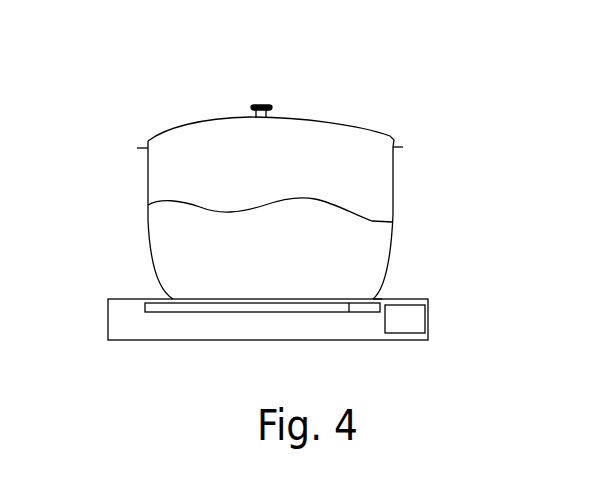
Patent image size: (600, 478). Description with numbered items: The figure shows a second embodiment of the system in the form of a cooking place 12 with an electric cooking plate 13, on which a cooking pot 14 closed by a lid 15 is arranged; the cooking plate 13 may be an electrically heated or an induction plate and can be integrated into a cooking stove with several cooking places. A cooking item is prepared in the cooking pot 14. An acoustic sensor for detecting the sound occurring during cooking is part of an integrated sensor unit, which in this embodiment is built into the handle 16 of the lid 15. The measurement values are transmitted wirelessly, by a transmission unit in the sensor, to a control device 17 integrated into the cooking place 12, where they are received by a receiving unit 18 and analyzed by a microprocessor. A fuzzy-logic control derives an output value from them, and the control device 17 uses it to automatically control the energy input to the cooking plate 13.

The cooking place 12 is at (108, 317).
The electric cooking plate 13 is at (307, 306).
The cooking pot 14 is at (148, 169).
The lid 15 is at (342, 122).
The handle of the lid 16 is at (262, 104).
The control device 17 is at (417, 317).
The receiving unit 18 is at (380, 299).